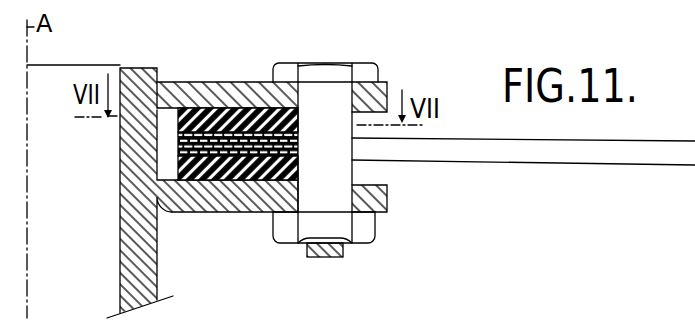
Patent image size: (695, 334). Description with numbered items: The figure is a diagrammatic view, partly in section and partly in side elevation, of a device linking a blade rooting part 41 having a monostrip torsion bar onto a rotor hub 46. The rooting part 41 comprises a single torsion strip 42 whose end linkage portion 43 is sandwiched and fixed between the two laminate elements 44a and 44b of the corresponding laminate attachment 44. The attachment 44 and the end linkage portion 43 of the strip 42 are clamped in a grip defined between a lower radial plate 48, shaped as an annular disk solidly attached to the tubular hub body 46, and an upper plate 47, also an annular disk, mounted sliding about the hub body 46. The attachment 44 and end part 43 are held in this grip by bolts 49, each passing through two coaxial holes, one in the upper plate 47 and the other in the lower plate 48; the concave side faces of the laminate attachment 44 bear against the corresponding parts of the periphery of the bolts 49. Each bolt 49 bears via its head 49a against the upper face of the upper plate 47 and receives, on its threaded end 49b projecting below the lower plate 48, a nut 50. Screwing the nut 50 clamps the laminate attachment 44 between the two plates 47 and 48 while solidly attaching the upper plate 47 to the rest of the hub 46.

The blade rooting part 41 is at (593, 174).
The single torsion strip 42 is at (655, 155).
The end linkage portion 43 is at (221, 179).
The laminate attachment 44 is at (175, 159).
The laminate element 44a is at (213, 118).
The laminate element 44b is at (268, 173).
The hub 46 is at (152, 203).
The upper plate 47 is at (375, 93).
The lower radial plate 48 is at (385, 208).
The bolt 49 is at (344, 165).
The head 49a is at (322, 72).
The threaded end 49b is at (327, 258).
The nut 50 is at (357, 233).